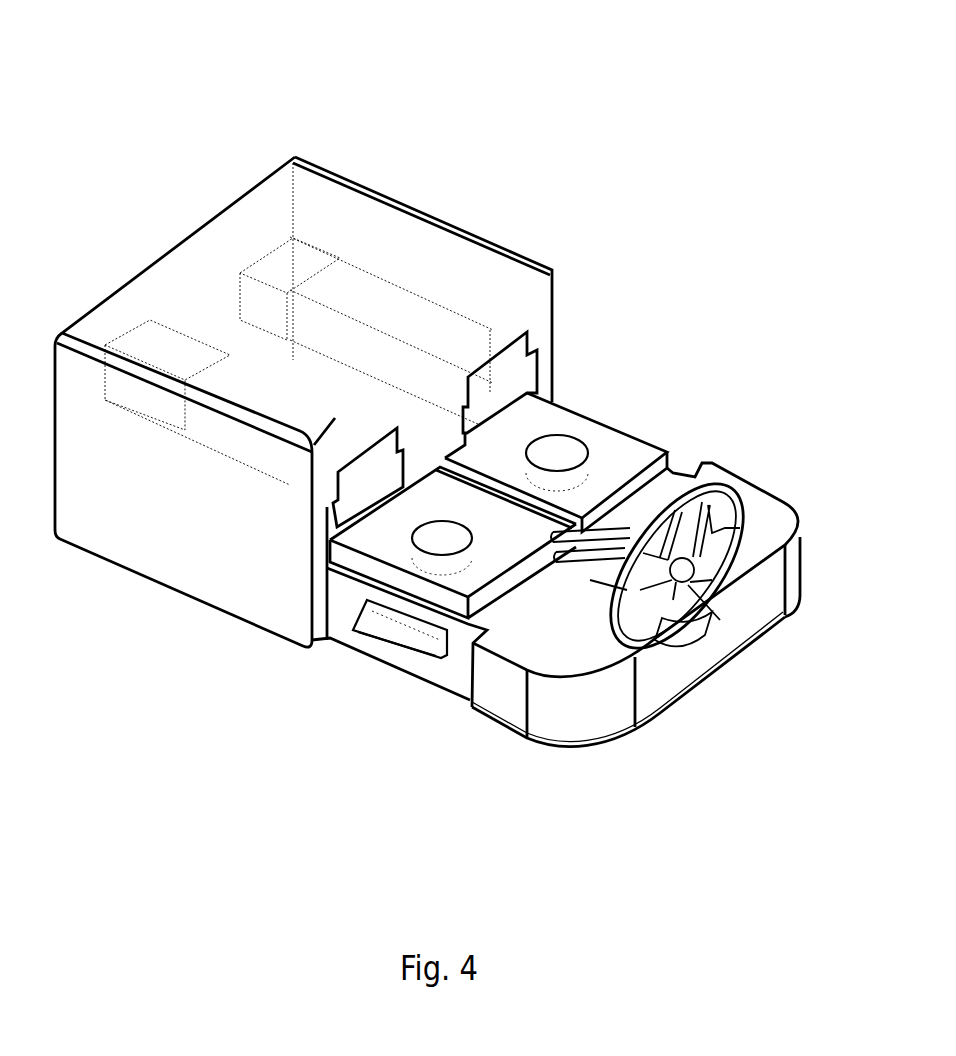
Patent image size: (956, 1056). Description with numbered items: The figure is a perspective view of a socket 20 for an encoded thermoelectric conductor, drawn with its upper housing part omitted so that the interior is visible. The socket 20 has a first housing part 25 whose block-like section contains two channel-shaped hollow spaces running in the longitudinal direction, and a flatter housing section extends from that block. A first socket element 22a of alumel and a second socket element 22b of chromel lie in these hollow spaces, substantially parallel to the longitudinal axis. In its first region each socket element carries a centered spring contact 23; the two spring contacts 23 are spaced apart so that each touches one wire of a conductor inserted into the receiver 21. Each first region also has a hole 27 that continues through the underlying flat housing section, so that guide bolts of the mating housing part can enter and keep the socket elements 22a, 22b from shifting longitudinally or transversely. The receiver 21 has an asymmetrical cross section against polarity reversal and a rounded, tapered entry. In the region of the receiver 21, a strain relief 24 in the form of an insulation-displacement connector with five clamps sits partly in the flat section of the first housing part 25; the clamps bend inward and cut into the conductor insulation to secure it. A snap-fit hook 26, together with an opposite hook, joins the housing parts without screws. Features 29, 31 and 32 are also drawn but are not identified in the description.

The socket 20 is at (682, 177).
The receiver 21 is at (713, 630).
The first socket element 22a is at (515, 428).
The second socket element 22b is at (370, 532).
The spring contact 23 is at (572, 570).
The strain relief 24 is at (717, 510).
The first housing part 25 is at (158, 510).
The snap-fit hook 26 is at (383, 630).
The hole 27 is at (558, 460).
The internal component 29 is at (357, 317).
The internal component 31 is at (233, 307).
The internal component 32 is at (113, 407).